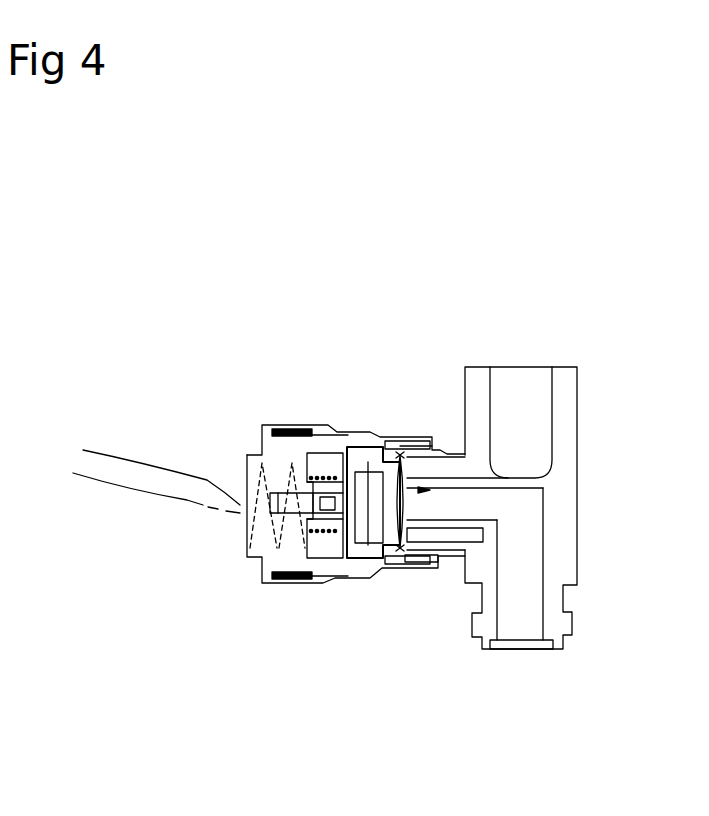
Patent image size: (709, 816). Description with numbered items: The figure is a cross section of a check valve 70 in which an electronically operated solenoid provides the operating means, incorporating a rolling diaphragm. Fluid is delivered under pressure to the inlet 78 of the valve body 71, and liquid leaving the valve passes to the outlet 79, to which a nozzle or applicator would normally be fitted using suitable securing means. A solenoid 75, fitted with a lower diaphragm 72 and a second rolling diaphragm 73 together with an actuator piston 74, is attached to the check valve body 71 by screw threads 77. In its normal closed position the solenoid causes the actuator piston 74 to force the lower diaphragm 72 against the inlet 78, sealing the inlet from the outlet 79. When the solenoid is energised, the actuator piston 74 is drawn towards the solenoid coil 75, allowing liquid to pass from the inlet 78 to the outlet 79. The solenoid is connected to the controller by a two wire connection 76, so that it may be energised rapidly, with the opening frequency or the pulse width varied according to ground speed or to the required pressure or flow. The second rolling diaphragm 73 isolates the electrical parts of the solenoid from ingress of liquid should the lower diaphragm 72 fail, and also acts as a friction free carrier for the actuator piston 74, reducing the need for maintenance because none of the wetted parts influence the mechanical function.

The check valve 70 is at (202, 328).
The valve body 71 is at (584, 387).
The lower diaphragm 72 is at (406, 542).
The second rolling diaphragm 73 is at (331, 572).
The actuator piston 74 is at (367, 472).
The solenoid 75 is at (263, 560).
The two wire connection 76 is at (187, 500).
The screw threads 77 is at (425, 565).
The inlet 78 is at (512, 398).
The outlet 79 is at (502, 502).